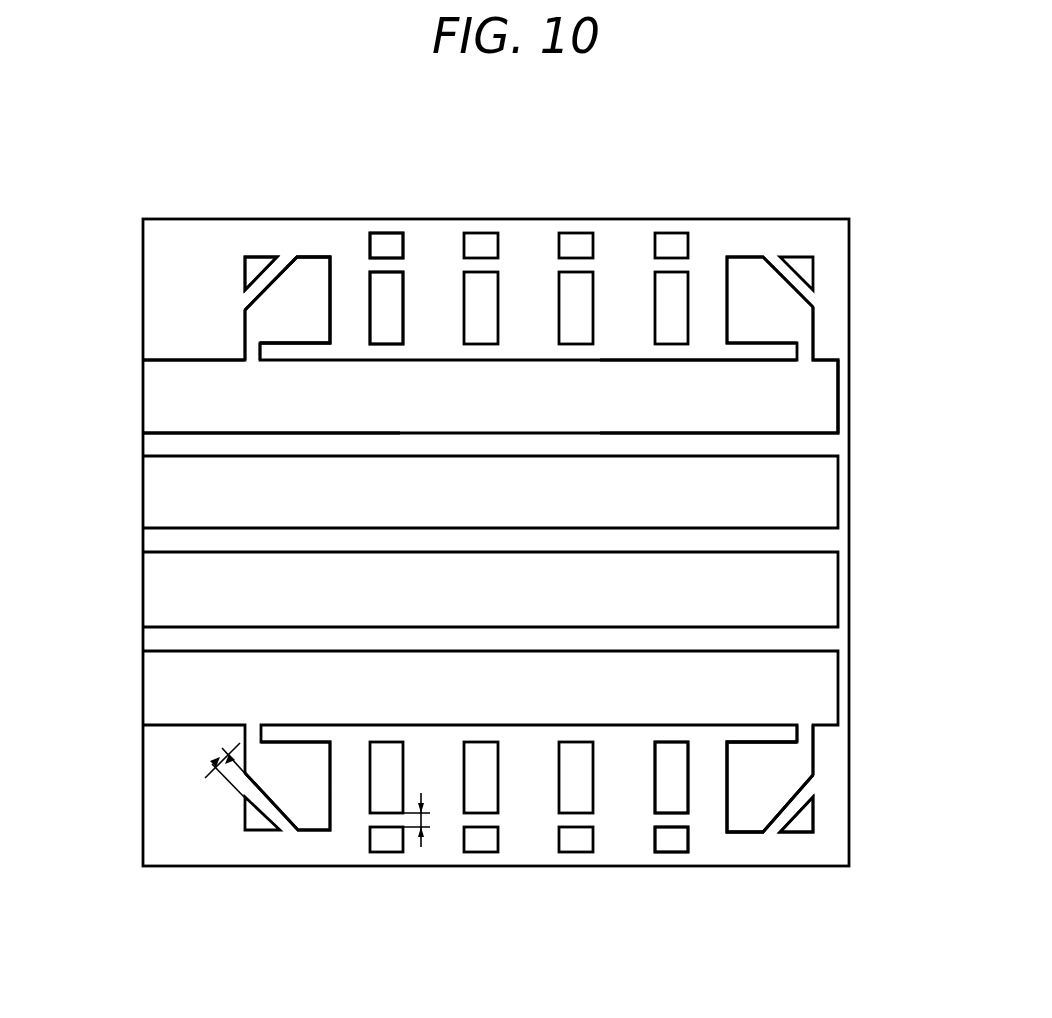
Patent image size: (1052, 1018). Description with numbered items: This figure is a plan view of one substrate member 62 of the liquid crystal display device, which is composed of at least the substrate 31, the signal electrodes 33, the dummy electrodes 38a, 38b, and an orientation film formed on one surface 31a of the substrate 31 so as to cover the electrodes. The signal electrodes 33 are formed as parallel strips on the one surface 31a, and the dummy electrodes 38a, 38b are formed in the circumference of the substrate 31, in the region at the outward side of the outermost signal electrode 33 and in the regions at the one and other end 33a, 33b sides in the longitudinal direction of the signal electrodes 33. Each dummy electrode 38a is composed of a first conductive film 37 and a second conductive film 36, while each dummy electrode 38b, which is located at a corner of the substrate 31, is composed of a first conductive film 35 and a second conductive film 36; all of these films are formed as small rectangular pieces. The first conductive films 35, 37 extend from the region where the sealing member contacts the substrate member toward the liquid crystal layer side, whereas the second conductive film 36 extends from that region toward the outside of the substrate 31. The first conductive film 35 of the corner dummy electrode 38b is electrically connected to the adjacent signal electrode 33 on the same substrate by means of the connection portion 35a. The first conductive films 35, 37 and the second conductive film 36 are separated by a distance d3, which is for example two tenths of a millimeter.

The substrate member 62 is at (822, 180).
The substrate 31 is at (849, 241).
The one surface 31a is at (832, 327).
The signal electrodes 33 is at (150, 413).
The one end of signal electrodes 33a is at (155, 381).
The other end of signal electrodes 33b is at (820, 395).
The first conductive film 35 is at (305, 268).
The connection portion 35a is at (246, 343).
The second conductive film 36 is at (256, 262).
The first conductive film 37 is at (399, 295).
The dummy electrode 38a is at (462, 168).
The dummy electrode 38b is at (338, 168).
The distance d3 is at (226, 758).